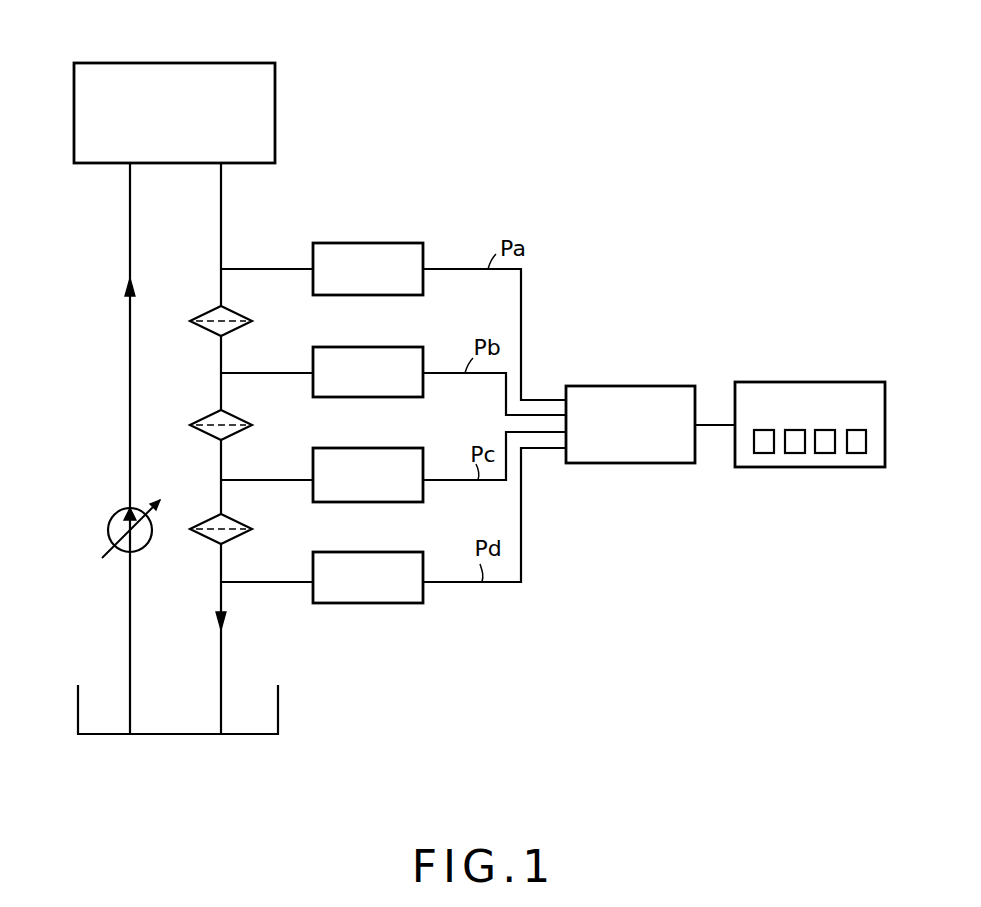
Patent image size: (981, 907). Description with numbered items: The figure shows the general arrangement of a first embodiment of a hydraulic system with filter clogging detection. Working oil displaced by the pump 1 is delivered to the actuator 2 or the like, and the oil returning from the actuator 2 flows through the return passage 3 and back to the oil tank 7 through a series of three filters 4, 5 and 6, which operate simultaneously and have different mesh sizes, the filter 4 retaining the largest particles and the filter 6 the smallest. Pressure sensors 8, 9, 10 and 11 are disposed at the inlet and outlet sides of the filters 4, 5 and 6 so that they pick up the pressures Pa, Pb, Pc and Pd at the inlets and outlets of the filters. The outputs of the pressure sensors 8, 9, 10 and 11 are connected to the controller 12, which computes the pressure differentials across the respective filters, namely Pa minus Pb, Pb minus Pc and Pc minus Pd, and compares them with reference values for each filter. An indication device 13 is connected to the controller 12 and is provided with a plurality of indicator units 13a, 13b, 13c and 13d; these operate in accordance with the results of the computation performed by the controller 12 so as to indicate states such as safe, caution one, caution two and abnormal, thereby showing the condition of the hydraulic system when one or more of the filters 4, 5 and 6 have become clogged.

The pump 1 is at (115, 516).
The actuator 2 is at (170, 63).
The return passage 3 is at (221, 207).
The filter 4 is at (215, 308).
The filter 5 is at (215, 411).
The filter 6 is at (215, 515).
The oil tank 7 is at (178, 737).
The pressure sensor 8 is at (416, 243).
The pressure sensor 9 is at (418, 347).
The pressure sensor 10 is at (415, 448).
The pressure sensor 11 is at (418, 552).
The controller 12 is at (647, 386).
The indication device 13 is at (806, 382).
The indicator unit 13a is at (762, 455).
The indicator unit 13b is at (796, 455).
The indicator unit 13c is at (826, 455).
The indicator unit 13d is at (856, 455).